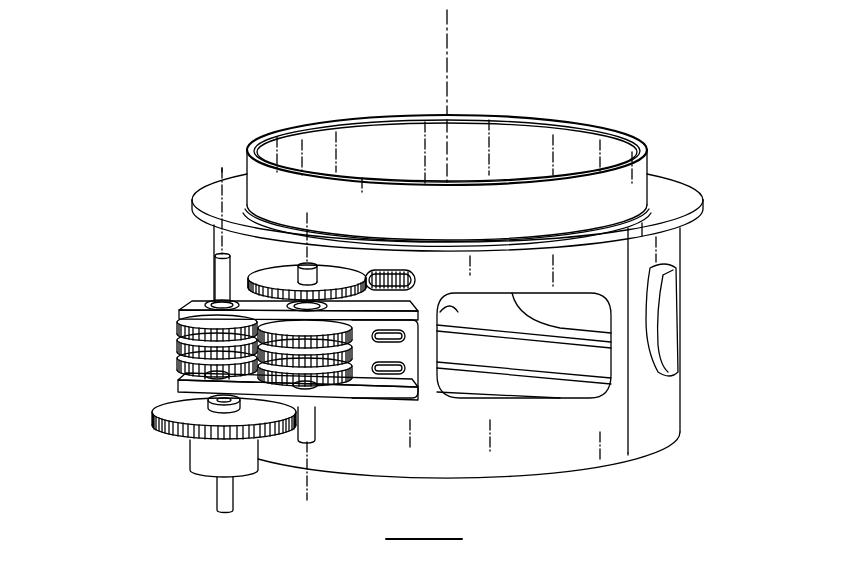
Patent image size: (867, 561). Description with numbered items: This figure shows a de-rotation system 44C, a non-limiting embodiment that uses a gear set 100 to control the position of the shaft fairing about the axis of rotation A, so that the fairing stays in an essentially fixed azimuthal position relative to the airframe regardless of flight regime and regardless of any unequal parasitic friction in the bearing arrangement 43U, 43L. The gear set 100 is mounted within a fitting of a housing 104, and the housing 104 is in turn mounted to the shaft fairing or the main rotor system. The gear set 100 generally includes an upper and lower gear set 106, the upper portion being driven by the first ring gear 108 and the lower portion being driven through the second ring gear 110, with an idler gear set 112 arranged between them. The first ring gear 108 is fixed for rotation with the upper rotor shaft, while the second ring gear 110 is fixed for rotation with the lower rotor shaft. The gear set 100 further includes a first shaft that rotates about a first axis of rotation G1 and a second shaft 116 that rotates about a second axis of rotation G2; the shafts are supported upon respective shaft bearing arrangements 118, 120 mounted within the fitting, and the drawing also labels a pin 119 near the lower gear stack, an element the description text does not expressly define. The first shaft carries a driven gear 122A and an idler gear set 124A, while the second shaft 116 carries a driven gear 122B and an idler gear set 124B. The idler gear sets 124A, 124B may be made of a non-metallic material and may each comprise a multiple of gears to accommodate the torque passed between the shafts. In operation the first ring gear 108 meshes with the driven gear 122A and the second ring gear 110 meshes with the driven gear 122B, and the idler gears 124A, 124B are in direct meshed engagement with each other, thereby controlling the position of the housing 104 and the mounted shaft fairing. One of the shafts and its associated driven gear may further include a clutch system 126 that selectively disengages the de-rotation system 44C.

The de-rotation system 44C is at (692, 80).
The upper bearing arrangement 43U is at (657, 197).
The lower bearing arrangement 43L is at (550, 380).
The gear set 100 is at (135, 372).
The housing 104 is at (480, 460).
The gear set (upper/lower gear set) 106 is at (172, 274).
The first ring gear 108 is at (392, 277).
The second ring gear 110 is at (588, 356).
The idler gear set 112 is at (180, 320).
The second shaft 116 is at (213, 282).
The shaft bearing arrangement 118 is at (337, 403).
The pin 119 is at (315, 432).
The shaft bearing arrangement 120 is at (185, 405).
The driven gear 122A is at (342, 280).
The driven gear 122B is at (162, 432).
The idler gear set 124A is at (414, 368).
The idler gear set 124B is at (182, 345).
The clutch system 126 is at (210, 467).
The axis of rotation A is at (447, 62).
The first axis of rotation G1 is at (307, 485).
The second axis of rotation G2 is at (222, 175).